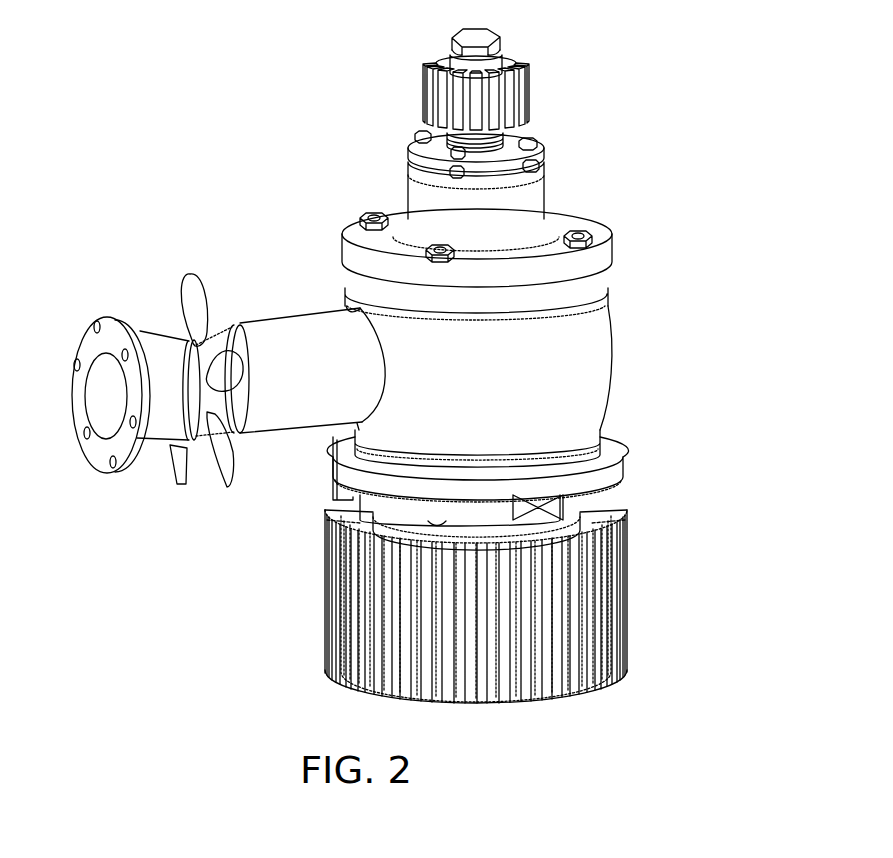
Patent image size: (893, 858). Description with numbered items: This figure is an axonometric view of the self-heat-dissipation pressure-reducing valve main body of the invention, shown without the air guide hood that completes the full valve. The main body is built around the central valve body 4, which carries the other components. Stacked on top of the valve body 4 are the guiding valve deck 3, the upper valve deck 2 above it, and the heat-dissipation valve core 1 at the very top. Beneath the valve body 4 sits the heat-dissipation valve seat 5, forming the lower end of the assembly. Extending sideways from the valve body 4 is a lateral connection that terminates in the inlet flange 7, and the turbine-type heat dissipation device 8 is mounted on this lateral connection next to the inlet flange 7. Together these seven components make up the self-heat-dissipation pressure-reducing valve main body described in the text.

The heat-dissipation valve core 1 is at (477, 63).
The upper valve deck 2 is at (500, 158).
The guiding valve deck 3 is at (507, 223).
The valve body 4 is at (518, 392).
The heat-dissipation valve seat 5 is at (458, 537).
The inlet flange 7 is at (175, 402).
The turbine-type heat dissipation device 8 is at (208, 360).